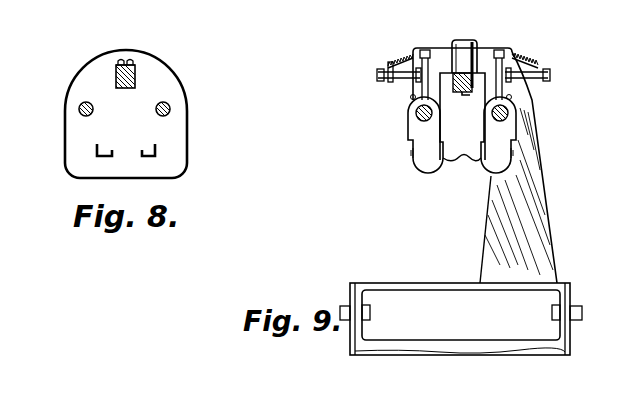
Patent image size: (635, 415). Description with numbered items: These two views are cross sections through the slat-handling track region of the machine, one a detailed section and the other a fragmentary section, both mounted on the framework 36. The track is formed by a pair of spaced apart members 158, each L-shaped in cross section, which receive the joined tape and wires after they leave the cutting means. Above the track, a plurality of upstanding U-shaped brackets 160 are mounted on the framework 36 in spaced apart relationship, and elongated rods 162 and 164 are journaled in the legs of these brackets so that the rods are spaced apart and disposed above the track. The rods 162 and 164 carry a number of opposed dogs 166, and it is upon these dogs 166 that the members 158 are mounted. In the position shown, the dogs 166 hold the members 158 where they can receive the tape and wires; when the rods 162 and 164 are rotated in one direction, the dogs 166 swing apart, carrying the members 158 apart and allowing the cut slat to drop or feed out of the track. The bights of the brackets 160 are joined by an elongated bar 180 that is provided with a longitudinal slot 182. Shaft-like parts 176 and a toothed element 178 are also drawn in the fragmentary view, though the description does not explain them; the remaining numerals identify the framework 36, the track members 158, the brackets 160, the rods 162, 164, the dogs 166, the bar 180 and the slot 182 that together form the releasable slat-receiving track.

In FIG. 9, the framework 36 is at (461, 319).
In FIG. 8, the spaced apart members 158 is at (143, 150).
In FIG. 9, the spaced apart members 158 is at (453, 163).
In FIG. 9, the upstanding U-shaped brackets 160 is at (537, 197).
In FIG. 8, the elongated rod 162 is at (170, 110).
In FIG. 9, the elongated rod 162 is at (416, 114).
In FIG. 8, the elongated rod 164 is at (79, 110).
In FIG. 9, the elongated rod 164 is at (509, 114).
In FIG. 9, the opposed dogs 166 is at (429, 174).
In FIG. 9, the shaft 176 is at (420, 89).
In FIG. 9, the rack 178 is at (400, 58).
In FIG. 8, the elongated bar 180 is at (135, 68).
In FIG. 9, the elongated bar 180 is at (463, 93).
In FIG. 8, the longitudinal slot 182 is at (117, 74).
In FIG. 9, the longitudinal slot 182 is at (478, 56).